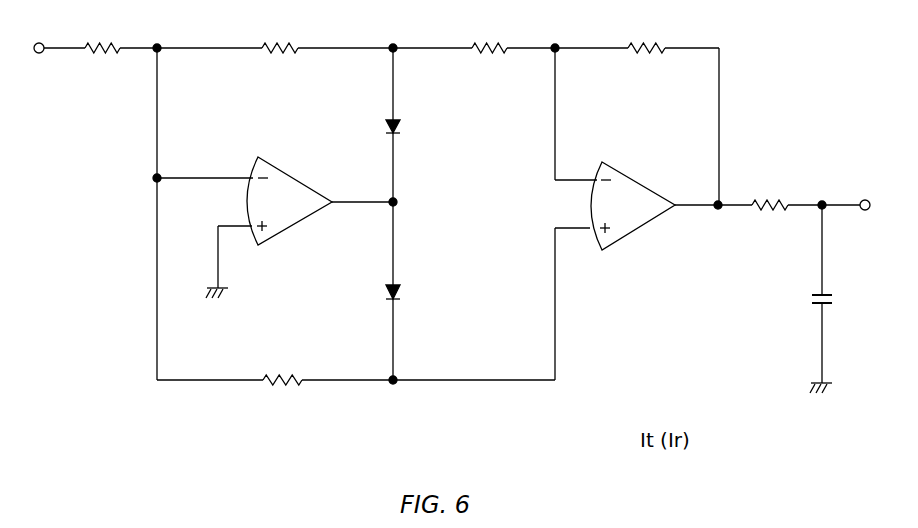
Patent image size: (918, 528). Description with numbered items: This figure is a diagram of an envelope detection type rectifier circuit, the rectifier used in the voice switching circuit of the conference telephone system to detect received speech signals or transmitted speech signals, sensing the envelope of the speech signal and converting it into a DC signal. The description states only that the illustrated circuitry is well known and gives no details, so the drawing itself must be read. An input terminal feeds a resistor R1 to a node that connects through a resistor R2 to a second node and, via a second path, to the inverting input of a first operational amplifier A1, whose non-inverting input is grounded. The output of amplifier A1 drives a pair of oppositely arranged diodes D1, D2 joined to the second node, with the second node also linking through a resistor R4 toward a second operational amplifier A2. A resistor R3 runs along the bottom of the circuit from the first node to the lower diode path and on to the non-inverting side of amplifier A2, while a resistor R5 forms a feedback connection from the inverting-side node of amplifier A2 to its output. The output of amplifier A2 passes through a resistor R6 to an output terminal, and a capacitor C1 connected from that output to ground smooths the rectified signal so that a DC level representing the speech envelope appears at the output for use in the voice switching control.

The resistor R1 is at (102, 34).
The resistor R2 is at (280, 34).
The resistor R3 is at (282, 366).
The resistor R4 is at (489, 34).
The resistor R5 is at (646, 34).
The resistor R6 is at (770, 191).
The operational amplifier A1 is at (289, 201).
The operational amplifier A2 is at (633, 206).
The diode D1 is at (408, 129).
The diode D2 is at (408, 297).
The capacitor C1 is at (835, 299).